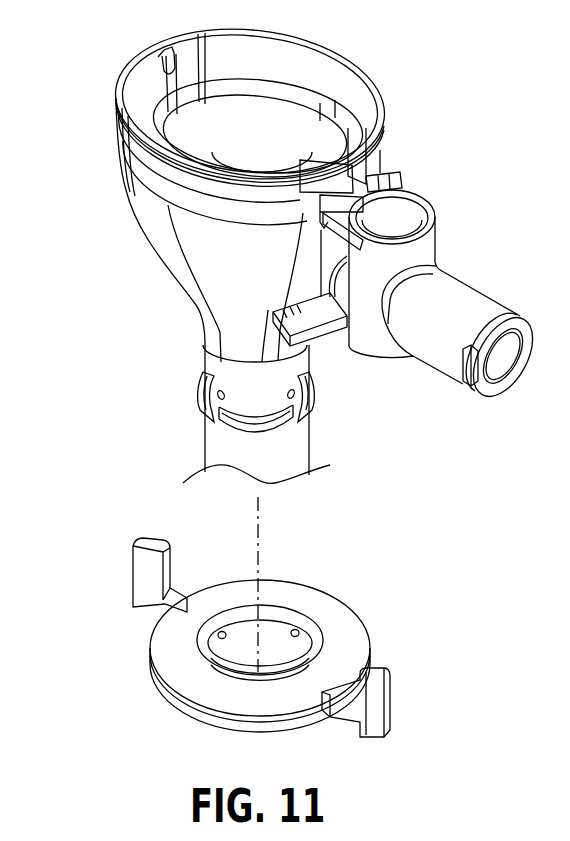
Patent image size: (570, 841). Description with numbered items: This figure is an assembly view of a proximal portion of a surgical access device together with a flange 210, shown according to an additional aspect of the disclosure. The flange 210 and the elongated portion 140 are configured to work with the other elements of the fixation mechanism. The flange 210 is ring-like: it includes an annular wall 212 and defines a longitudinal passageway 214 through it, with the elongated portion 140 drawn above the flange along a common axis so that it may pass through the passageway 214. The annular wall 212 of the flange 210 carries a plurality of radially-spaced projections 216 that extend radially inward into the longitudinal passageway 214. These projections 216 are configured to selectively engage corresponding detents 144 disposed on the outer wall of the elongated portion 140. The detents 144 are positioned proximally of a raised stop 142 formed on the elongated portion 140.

The elongated portion 140 is at (300, 446).
The raised stop 142 is at (242, 427).
The detents 144 is at (203, 372).
The flange 210 is at (347, 654).
The annular wall 212 is at (303, 643).
The longitudinal passageway 214 is at (245, 663).
The projections 216 is at (295, 629).